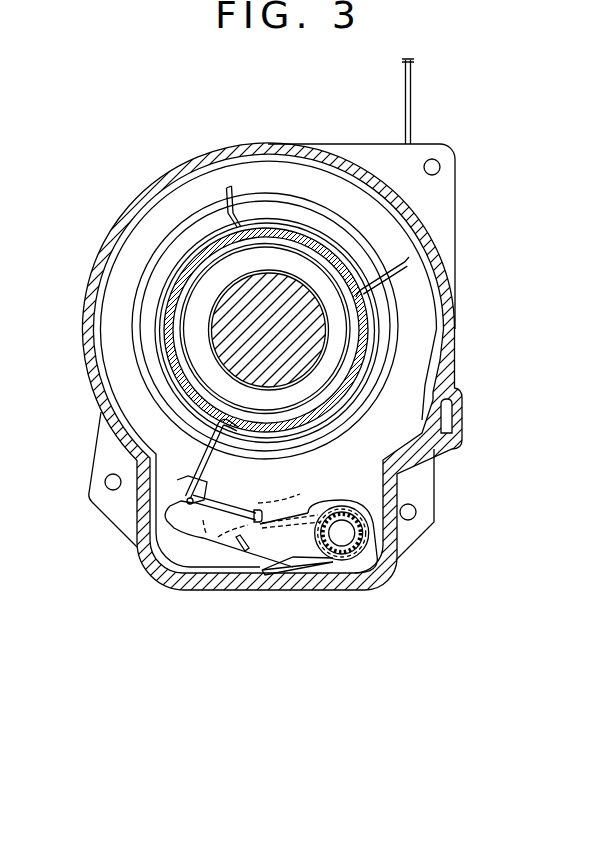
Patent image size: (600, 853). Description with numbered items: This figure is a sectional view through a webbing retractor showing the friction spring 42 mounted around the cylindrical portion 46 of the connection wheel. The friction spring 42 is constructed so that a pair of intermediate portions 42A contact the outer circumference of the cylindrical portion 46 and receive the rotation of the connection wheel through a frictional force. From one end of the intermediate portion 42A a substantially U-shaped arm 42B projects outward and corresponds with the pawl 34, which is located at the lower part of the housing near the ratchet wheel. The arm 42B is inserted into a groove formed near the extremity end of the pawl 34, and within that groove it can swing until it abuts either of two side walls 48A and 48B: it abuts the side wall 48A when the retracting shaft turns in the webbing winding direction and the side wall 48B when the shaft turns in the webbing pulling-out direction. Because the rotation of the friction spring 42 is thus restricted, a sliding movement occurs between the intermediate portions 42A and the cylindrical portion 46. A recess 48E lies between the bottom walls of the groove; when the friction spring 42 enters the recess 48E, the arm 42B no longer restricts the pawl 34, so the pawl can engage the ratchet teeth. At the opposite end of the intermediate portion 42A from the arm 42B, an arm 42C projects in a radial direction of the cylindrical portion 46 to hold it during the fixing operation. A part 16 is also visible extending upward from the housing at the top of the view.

The shaft 16 is at (411, 99).
The pawl 34 is at (132, 536).
The friction spring 42 is at (406, 258).
The intermediate portions 42A is at (375, 360).
The arm 42B is at (214, 480).
The arm 42C is at (230, 186).
The cylindrical portion 46 is at (300, 200).
The side wall 48A is at (137, 460).
The side wall 48B is at (276, 500).
The recess 48E is at (236, 550).